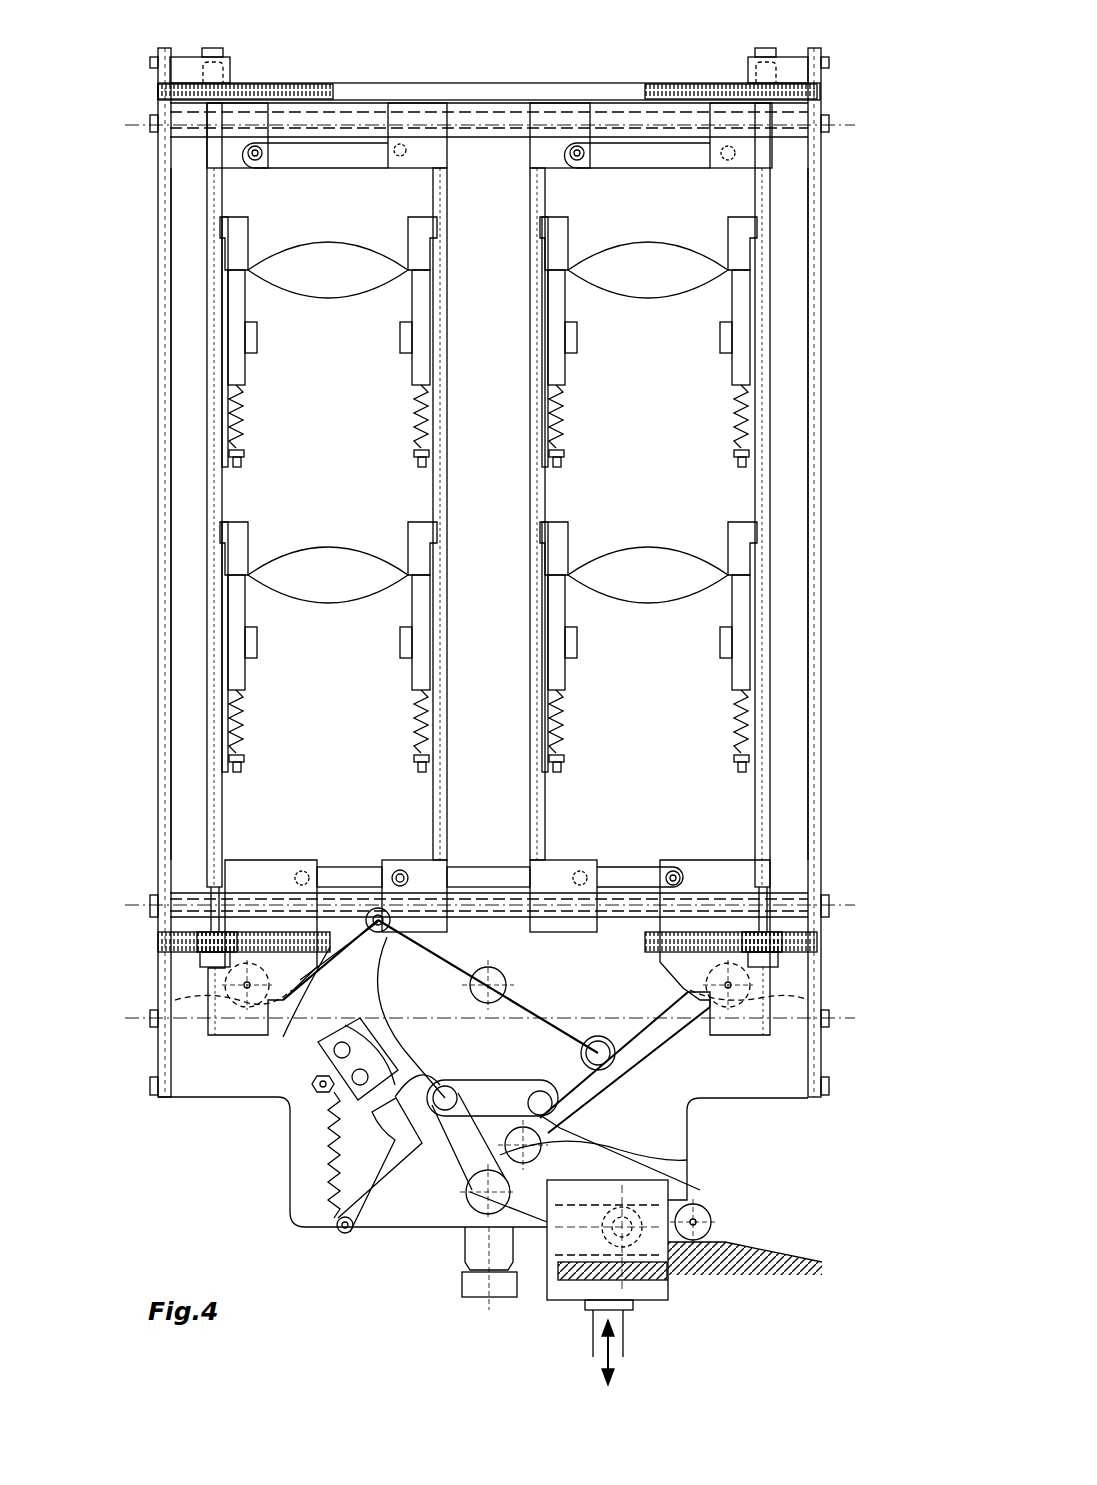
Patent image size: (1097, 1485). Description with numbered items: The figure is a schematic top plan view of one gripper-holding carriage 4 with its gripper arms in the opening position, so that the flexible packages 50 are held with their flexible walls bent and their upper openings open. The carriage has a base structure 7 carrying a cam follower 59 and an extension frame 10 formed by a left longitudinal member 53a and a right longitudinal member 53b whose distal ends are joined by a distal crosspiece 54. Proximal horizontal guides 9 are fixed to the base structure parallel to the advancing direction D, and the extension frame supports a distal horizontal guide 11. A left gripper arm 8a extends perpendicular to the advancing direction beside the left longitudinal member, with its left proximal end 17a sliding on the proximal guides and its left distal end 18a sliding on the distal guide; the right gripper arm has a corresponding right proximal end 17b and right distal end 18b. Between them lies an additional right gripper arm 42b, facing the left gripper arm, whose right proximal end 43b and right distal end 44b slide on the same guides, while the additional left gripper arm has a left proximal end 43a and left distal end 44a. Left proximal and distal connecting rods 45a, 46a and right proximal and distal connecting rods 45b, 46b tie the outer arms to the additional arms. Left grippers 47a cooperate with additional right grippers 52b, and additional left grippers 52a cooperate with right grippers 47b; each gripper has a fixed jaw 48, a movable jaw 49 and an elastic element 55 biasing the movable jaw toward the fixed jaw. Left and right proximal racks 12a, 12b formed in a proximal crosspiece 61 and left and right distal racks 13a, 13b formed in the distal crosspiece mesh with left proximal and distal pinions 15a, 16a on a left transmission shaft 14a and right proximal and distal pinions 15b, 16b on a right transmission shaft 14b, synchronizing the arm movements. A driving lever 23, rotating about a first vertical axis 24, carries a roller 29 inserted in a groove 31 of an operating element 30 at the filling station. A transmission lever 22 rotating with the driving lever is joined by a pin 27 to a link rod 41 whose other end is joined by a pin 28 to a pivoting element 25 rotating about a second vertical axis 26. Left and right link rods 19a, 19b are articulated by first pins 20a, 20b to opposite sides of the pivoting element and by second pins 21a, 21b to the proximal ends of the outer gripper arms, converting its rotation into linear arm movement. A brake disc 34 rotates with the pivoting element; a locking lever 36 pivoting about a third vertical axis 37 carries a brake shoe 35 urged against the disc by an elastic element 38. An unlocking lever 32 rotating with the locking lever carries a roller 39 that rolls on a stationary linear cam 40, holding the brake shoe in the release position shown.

The gripper-holding carriage 4 is at (868, 252).
The base structure 7 is at (292, 1222).
The left gripper arm 8a is at (240, 490).
The proximal horizontal guides 9 is at (185, 900).
The extension frame 10 is at (830, 502).
The distal horizontal guide 11 is at (375, 118).
The left proximal rack 12a is at (268, 930).
The right proximal rack 12b is at (715, 930).
The left distal rack 13a is at (280, 80).
The right distal rack 13b is at (702, 80).
The left transmission shaft 14a is at (175, 420).
The right transmission shaft 14b is at (803, 420).
The left proximal pinion 15a is at (178, 945).
The right proximal pinion 15b is at (800, 945).
The left distal pinion 16a is at (148, 55).
The right distal pinion 16b is at (826, 58).
The left proximal end 17a is at (248, 858).
The right proximal end 17b is at (720, 858).
The left distal end 18a is at (208, 150).
The right distal end 18b is at (752, 152).
The left link rod 19a is at (280, 1040).
The right link rod 19b is at (740, 1040).
The first pin 20a is at (378, 935).
The first pin 20b is at (600, 1075).
The second pin 21a is at (205, 1005).
The second pin 21b is at (775, 1005).
The transmission lever 22 is at (468, 1210).
The driving lever 23 is at (535, 1260).
The first vertical axis 24 is at (462, 1210).
The pivoting element 25 is at (565, 1000).
The second vertical axis 26 is at (500, 992).
The pin 27 is at (448, 1060).
The pin 28 is at (525, 1100).
The roller 29 is at (650, 1282).
The operating element 30 is at (670, 1285).
The groove 31 is at (572, 1290).
The unlocking lever 32 is at (660, 1178).
The brake disc 34 is at (318, 1085).
The brake shoe 35 is at (410, 1095).
The locking lever 36 is at (345, 1235).
The third vertical axis 37 is at (700, 1158).
The elastic element 38 is at (320, 1160).
The roller 39 is at (715, 1215).
The stationary linear cam 40 is at (745, 1258).
The link rod 41 is at (600, 1060).
The additional right gripper arm 42b is at (420, 490).
The left proximal end 43a is at (582, 860).
The right proximal end 43b is at (400, 860).
The left distal end 44a is at (560, 100).
The right distal end 44b is at (418, 100).
The left proximal connecting rod 45a is at (338, 870).
The right proximal connecting rod 45b is at (485, 870).
The left distal connecting rod 46a is at (360, 148).
The right distal connecting rod 46b is at (620, 150).
The left grippers 47a is at (255, 285).
The right grippers 47b is at (720, 285).
The fixed jaw 48 is at (248, 232).
The movable jaw 49 is at (222, 305).
The flexible packages 50 is at (325, 242).
The additional left grippers 52a is at (577, 285).
The additional right grippers 52b is at (400, 285).
The left longitudinal member 53a is at (165, 572).
The right longitudinal member 53b is at (815, 588).
The distal crosspiece 54 is at (603, 88).
The elastic element 55 is at (243, 418).
The cam follower 59 is at (472, 1295).
The proximal crosspiece 61 is at (643, 935).
The advancing direction D is at (178, 1258).